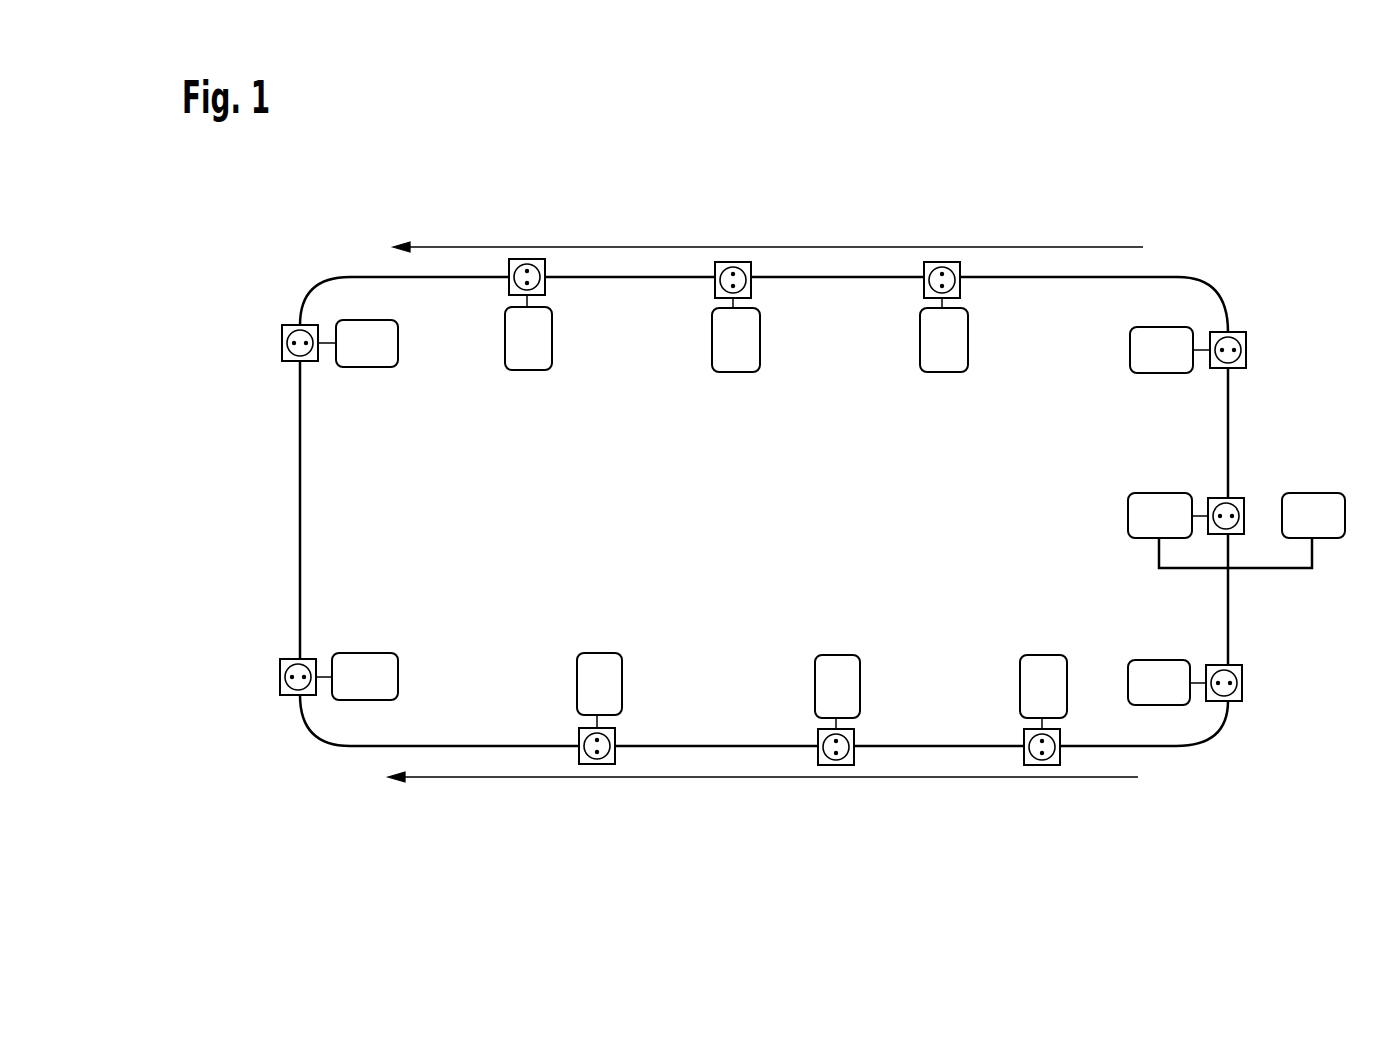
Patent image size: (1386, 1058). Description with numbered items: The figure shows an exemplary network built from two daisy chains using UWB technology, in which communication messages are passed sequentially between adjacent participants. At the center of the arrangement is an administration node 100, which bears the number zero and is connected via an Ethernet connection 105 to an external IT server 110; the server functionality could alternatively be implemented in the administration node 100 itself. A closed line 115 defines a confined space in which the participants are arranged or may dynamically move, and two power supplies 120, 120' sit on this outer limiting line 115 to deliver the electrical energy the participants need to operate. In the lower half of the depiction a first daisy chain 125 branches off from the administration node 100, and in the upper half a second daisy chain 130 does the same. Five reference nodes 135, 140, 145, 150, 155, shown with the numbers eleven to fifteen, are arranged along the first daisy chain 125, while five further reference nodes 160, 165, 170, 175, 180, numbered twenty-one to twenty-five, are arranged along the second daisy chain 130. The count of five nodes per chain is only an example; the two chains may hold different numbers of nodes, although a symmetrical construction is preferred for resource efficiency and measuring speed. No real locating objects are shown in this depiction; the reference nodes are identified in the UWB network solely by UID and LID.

The administration node 100 is at (1128, 515).
The Ethernet connection 105 is at (1280, 570).
The external IT server 110 is at (1312, 493).
The line 115 is at (300, 447).
The power supply 120 is at (833, 797).
The power supply 120' is at (1043, 797).
The first daisy chain (C1) 125 is at (940, 779).
The second daisy chain (C2) 130 is at (818, 246).
The reference node 135 is at (1160, 660).
The reference node 140 is at (1045, 657).
The reference node 145 is at (838, 655).
The reference node 150 is at (600, 652).
The reference node 155 is at (365, 652).
The reference node 160 is at (1130, 350).
The reference node 165 is at (946, 372).
The reference node 170 is at (737, 372).
The reference node 175 is at (528, 370).
The reference node 180 is at (366, 367).